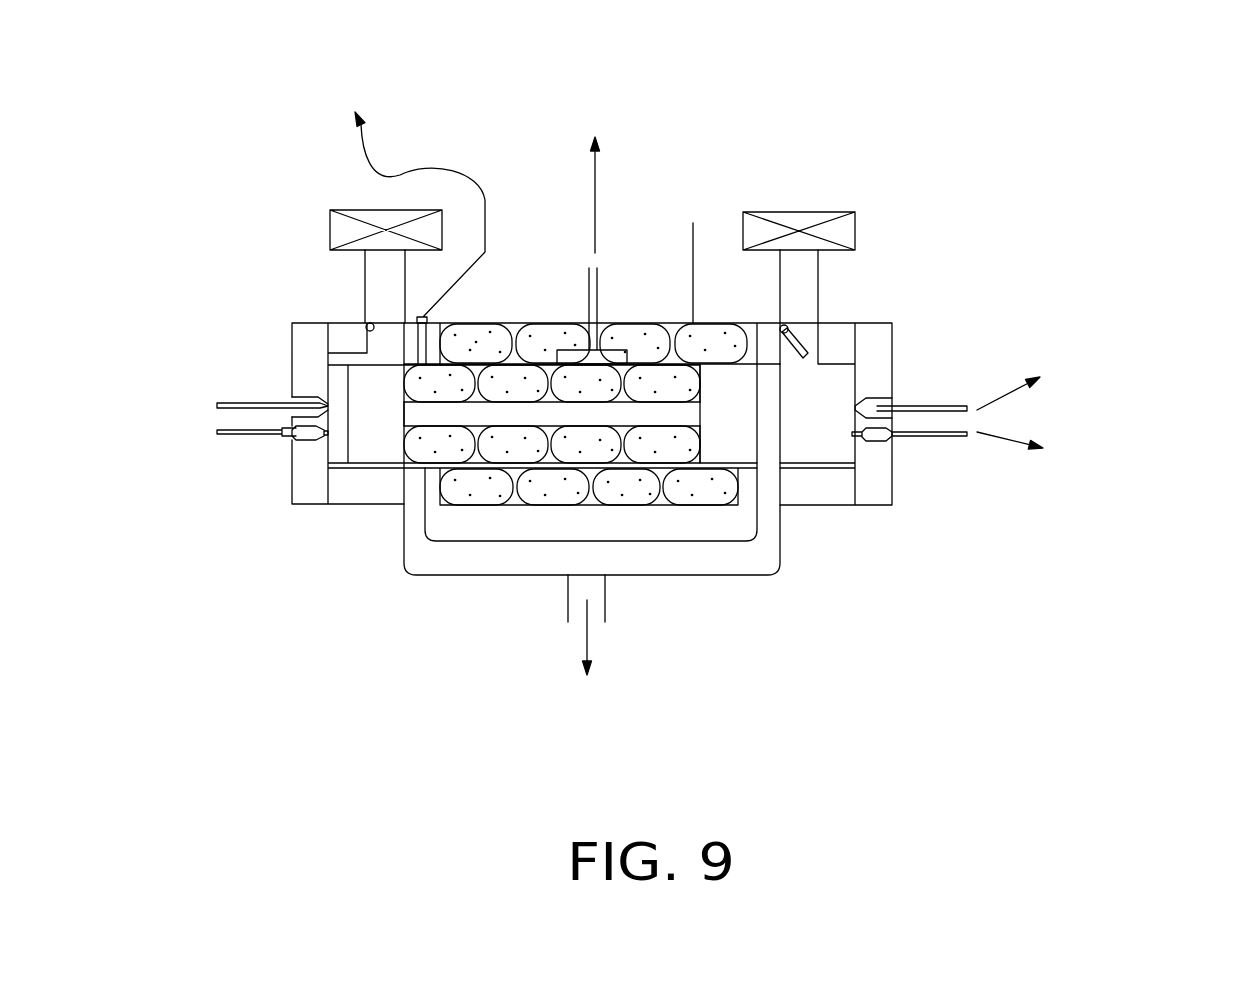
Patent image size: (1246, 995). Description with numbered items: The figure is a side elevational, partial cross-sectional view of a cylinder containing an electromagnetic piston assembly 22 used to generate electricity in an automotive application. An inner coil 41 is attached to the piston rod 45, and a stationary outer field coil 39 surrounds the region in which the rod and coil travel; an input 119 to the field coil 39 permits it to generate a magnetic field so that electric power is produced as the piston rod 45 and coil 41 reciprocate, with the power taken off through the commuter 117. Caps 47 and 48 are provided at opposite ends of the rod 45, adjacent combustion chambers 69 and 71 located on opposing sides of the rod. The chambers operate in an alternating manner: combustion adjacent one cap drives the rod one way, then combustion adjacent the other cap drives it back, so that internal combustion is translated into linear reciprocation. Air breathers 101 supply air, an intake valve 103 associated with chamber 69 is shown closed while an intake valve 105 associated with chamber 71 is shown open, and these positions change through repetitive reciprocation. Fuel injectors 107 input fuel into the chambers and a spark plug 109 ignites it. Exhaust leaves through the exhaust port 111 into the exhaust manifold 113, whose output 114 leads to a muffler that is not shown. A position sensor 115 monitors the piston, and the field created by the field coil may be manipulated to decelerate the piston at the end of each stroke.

The electromagnetic piston assembly 22 is at (261, 545).
The outer stationary field coil 39 is at (477, 337).
The inner coil 41 is at (432, 455).
The piston rod 45 is at (513, 412).
The cap 47 is at (362, 442).
The cap 48 is at (733, 383).
The combustion chamber 69 is at (338, 393).
The combustion chamber 71 is at (833, 390).
The air breather 101 is at (304, 221).
The intake valve 103 is at (343, 310).
The intake valve 105 is at (812, 320).
The fuel injector 107 is at (886, 386).
The spark plug 109 is at (904, 450).
The exhaust port 111 is at (796, 483).
The exhaust manifold 113 is at (718, 567).
The output 114 is at (597, 585).
The position sensor 115 is at (399, 347).
The commuter 117 is at (613, 353).
The input 119 is at (702, 205).